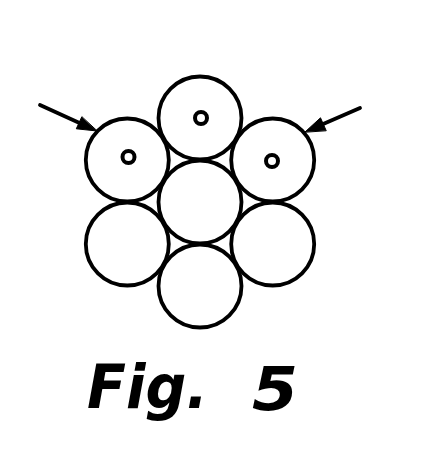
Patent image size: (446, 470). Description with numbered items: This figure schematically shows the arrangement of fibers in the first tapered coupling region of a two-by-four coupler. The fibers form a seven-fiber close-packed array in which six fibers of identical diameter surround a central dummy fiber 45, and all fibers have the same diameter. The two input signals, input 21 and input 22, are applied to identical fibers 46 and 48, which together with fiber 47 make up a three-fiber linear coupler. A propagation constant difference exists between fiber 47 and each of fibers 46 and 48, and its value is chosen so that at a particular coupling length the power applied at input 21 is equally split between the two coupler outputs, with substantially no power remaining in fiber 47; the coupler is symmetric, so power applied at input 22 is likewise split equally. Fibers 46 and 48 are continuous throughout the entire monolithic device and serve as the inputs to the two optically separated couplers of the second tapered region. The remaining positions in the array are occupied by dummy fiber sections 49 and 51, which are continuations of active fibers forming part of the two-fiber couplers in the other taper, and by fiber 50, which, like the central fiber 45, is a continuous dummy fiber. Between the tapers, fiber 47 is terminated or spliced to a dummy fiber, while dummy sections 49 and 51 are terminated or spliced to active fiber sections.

The input fiber 21 is at (58, 113).
The input fiber 22 is at (352, 110).
The central dummy fiber 45 is at (220, 216).
The active fiber 46 is at (126, 118).
The active fiber 47 is at (200, 77).
The active fiber 48 is at (273, 118).
The dummy fiber section 49 is at (314, 238).
The dummy fiber 50 is at (234, 310).
The dummy fiber section 51 is at (100, 276).